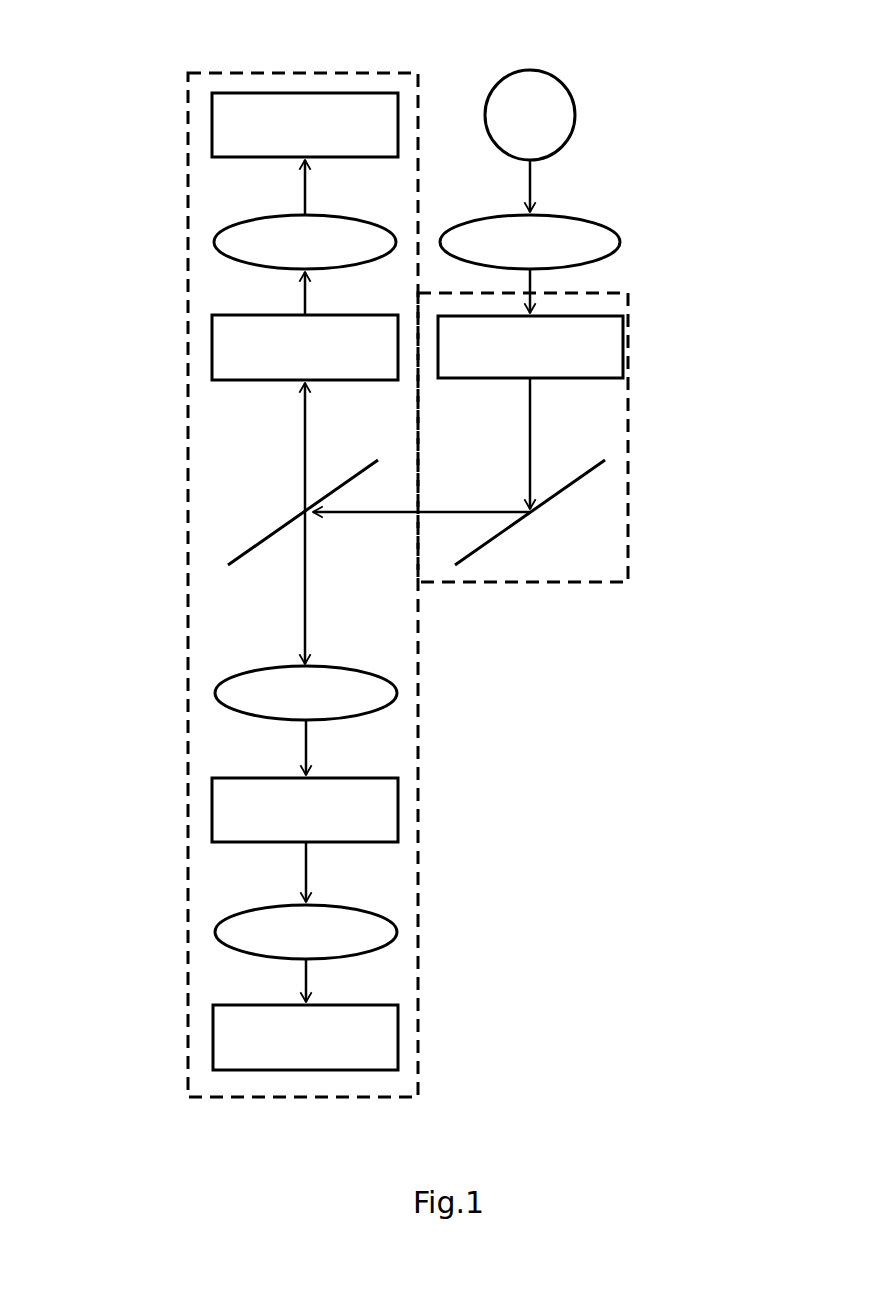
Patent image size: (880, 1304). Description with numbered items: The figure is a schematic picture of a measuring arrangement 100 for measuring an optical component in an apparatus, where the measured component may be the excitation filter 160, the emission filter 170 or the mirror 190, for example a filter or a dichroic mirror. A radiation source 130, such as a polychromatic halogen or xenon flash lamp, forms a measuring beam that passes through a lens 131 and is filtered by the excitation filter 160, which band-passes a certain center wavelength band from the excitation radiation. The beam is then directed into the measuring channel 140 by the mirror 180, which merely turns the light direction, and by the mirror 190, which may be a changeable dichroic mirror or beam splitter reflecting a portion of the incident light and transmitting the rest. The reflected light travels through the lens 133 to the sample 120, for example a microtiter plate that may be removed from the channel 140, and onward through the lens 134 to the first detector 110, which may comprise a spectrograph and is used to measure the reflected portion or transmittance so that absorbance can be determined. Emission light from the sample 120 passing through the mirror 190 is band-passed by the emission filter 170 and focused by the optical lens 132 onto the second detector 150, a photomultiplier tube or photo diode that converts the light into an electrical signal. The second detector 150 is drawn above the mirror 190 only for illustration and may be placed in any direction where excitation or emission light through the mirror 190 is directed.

The measuring arrangement 100 is at (118, 64).
The first detector 110 is at (398, 1045).
The sample 120 is at (398, 818).
The radiation source 130 is at (578, 122).
The lens 131 is at (620, 248).
The optical lens 132 is at (214, 239).
The lens 133 is at (215, 690).
The lens 134 is at (215, 923).
The measuring channel 140 is at (418, 676).
The second detector 150 is at (212, 125).
The excitation filter 160 is at (623, 357).
The emission filter 170 is at (212, 350).
The mirror 180 is at (526, 437).
The mirror 190 is at (232, 558).